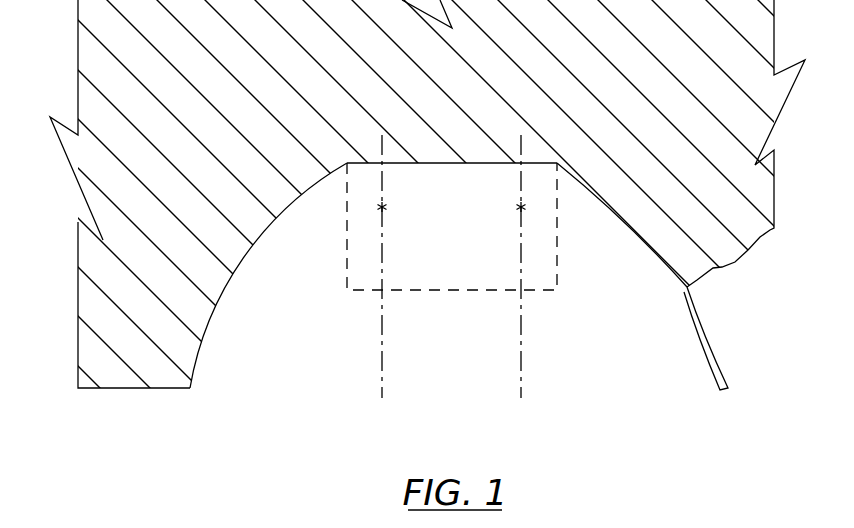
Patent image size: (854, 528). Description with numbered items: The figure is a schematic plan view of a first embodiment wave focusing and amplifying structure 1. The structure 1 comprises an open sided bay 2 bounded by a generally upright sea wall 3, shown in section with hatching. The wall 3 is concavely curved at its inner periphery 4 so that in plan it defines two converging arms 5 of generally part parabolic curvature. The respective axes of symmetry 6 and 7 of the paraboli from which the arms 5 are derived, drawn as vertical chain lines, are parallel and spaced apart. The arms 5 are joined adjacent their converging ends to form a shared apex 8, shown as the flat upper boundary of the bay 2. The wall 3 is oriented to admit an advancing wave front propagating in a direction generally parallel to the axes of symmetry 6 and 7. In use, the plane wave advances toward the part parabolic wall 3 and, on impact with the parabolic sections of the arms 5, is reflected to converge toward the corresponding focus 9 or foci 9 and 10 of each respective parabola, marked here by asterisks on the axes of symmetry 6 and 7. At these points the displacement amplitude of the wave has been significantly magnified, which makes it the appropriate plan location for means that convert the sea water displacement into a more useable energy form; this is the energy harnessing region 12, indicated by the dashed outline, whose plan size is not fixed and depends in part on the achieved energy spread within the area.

The wave focusing structure 1 is at (145, 414).
The open sided bay 2 is at (443, 334).
The sea wall 3 is at (227, 333).
The inner periphery 4 is at (650, 250).
The converging arms 5 is at (708, 358).
The axis of symmetry 6 is at (383, 388).
The axis of symmetry 7 is at (520, 358).
The shared apex 8 is at (453, 174).
The focus 9 is at (388, 209).
The focus 10 is at (517, 209).
The energy harnessing region 12 is at (340, 232).